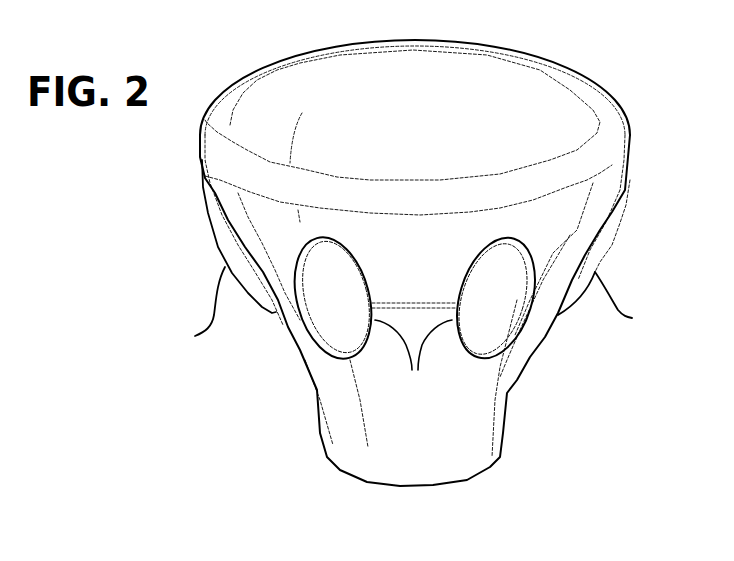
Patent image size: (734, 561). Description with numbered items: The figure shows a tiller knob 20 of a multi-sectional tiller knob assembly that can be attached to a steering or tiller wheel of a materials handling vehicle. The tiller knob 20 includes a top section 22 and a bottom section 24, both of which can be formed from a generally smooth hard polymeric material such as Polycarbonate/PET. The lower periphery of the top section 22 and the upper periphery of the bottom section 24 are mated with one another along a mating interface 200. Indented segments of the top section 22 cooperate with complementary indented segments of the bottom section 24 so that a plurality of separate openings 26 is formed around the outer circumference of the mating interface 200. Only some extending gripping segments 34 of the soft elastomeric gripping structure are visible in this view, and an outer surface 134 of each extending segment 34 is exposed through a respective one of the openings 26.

The tiller knob 20 is at (620, 57).
The top section 22 is at (418, 53).
The bottom section 24 is at (480, 423).
The openings 26 is at (413, 358).
The extending gripping segments 34 is at (330, 330).
The outer surface 134 is at (511, 308).
The mating interface 200 is at (419, 305).